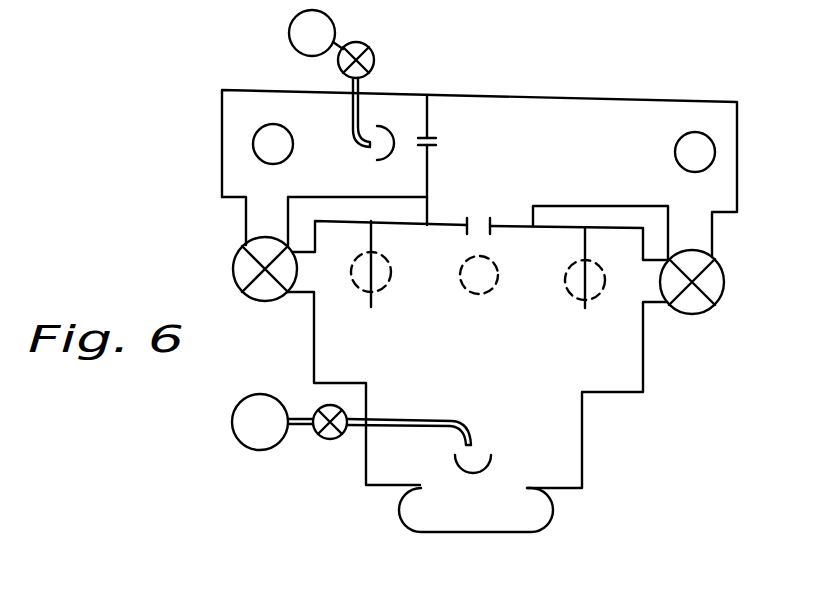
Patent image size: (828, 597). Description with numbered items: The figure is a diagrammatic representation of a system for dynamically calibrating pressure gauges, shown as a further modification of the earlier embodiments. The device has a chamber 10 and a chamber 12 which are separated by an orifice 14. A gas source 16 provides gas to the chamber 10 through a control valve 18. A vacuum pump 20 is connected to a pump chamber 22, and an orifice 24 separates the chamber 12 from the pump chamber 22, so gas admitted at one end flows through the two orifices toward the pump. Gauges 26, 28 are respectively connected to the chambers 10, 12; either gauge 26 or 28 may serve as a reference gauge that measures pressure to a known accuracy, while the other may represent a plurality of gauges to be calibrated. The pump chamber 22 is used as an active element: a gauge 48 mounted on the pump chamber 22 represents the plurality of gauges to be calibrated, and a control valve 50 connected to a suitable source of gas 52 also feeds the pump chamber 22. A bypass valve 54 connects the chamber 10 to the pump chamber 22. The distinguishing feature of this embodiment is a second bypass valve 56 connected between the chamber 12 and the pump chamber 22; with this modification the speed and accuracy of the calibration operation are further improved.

The chamber 10 is at (231, 129).
The chamber 12 is at (584, 108).
The orifice 14 is at (439, 143).
The gas source 16 is at (289, 32).
The control valve 18 is at (375, 66).
The vacuum pump 20 is at (550, 526).
The pump chamber 22 is at (610, 363).
The orifice 24 is at (485, 236).
The gauge 26 is at (270, 124).
The gauge 28 is at (715, 152).
The gauge 48 is at (388, 285).
The control valve 50 is at (328, 440).
The source of gas 52 is at (236, 442).
The bypass valve 54 is at (255, 295).
The bypass valve 56 is at (700, 312).